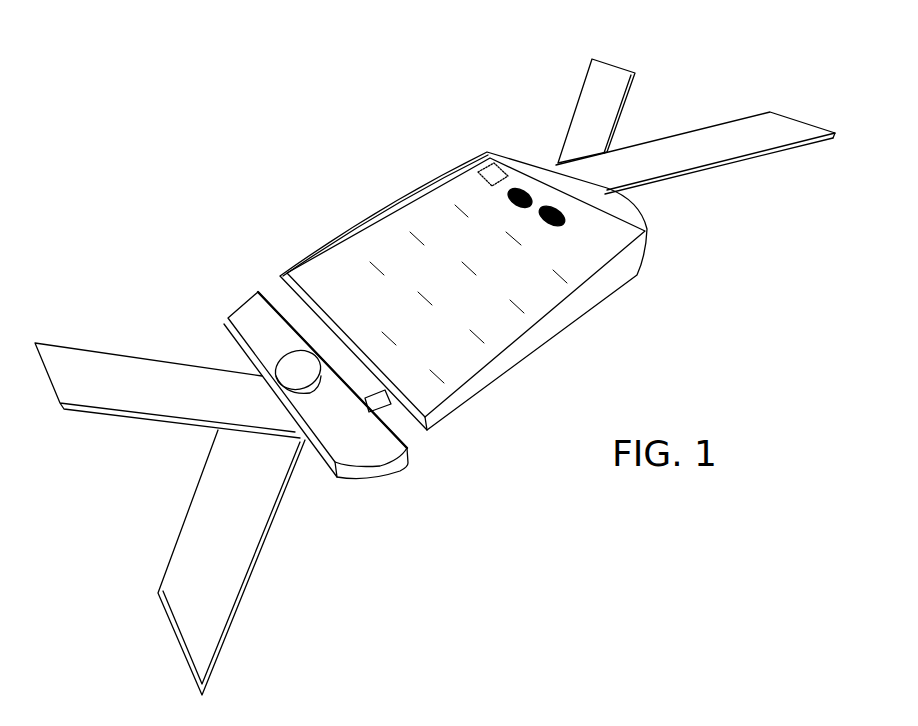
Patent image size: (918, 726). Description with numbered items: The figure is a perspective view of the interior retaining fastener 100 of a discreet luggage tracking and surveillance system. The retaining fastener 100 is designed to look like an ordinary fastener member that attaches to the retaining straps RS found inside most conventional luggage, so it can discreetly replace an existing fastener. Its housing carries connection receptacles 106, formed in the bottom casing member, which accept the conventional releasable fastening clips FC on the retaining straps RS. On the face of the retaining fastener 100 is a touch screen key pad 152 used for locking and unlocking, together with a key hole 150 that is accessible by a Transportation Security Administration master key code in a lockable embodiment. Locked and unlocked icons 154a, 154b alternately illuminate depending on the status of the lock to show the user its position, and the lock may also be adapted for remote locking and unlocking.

The interior retaining fastener 100 is at (604, 287).
The connection receptacles 106 is at (278, 307).
The key hole 150 is at (482, 168).
The touch screen key pad 152 is at (416, 200).
The locked icon 154a is at (566, 222).
The unlocked icon 154b is at (518, 190).
The retaining straps RS is at (596, 91).
The flexible connector FC is at (628, 203).